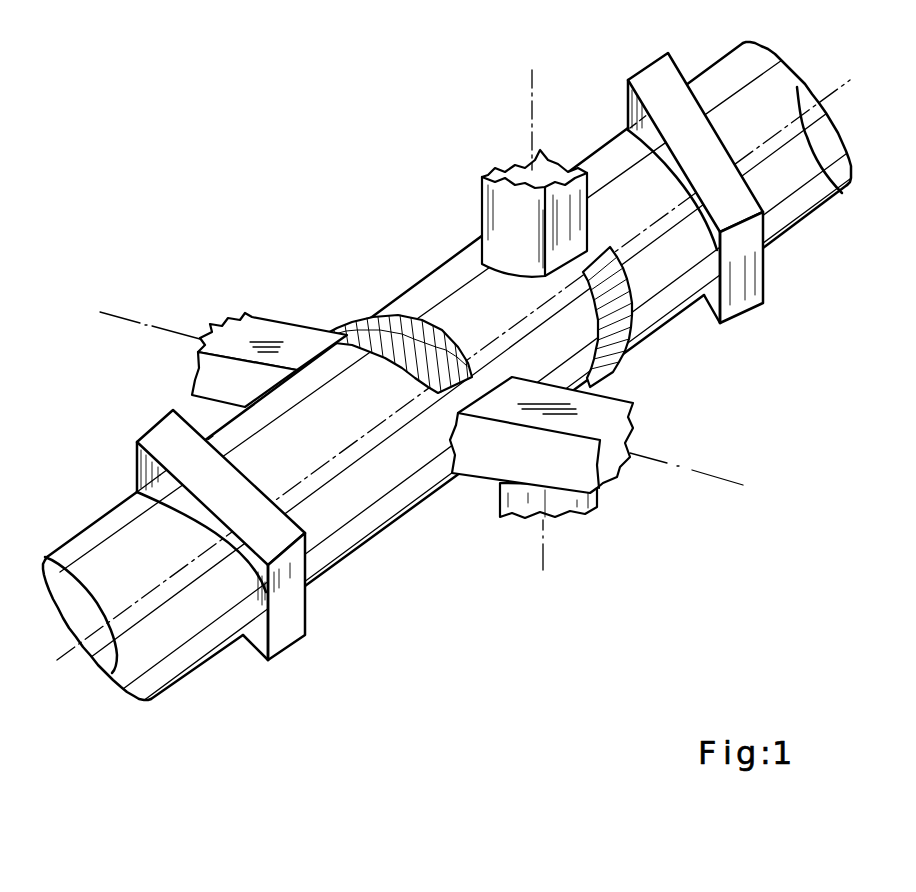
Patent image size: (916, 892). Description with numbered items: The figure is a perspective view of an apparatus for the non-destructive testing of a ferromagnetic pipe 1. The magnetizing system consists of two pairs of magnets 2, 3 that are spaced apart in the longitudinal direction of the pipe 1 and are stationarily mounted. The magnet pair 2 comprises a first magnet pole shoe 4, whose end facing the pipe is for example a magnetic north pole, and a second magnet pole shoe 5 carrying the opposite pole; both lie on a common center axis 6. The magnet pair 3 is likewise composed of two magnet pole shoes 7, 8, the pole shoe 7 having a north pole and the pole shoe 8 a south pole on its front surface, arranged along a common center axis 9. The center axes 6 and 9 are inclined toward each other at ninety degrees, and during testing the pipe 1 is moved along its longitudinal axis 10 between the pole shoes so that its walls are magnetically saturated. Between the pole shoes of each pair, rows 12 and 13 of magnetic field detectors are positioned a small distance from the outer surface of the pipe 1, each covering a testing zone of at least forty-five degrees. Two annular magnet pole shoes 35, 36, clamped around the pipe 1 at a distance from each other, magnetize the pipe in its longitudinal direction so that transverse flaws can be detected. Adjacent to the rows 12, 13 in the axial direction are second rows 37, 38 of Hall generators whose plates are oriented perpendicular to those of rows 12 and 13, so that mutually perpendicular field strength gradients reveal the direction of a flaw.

The ferromagnetic pipe 1 is at (675, 297).
The magnet pair 2 is at (390, 419).
The magnet pair 3 is at (583, 316).
The first magnet pole shoe 4 is at (292, 346).
The second magnet pole shoe 5 is at (618, 440).
The center axis 6 is at (421, 398).
The magnet pole shoe 7 is at (513, 207).
The magnet pole shoe 8 is at (528, 516).
The center axis 9 is at (548, 543).
The longitudinal axis 10 is at (152, 596).
The row of magnetic field detectors 12 is at (397, 354).
The row of magnetic field detectors 13 is at (598, 317).
The annular magnet pole shoe 35 is at (283, 620).
The annular magnet pole shoe 36 is at (752, 230).
The second row of Hall generators 37 is at (452, 323).
The second row of Hall generators 38 is at (579, 337).